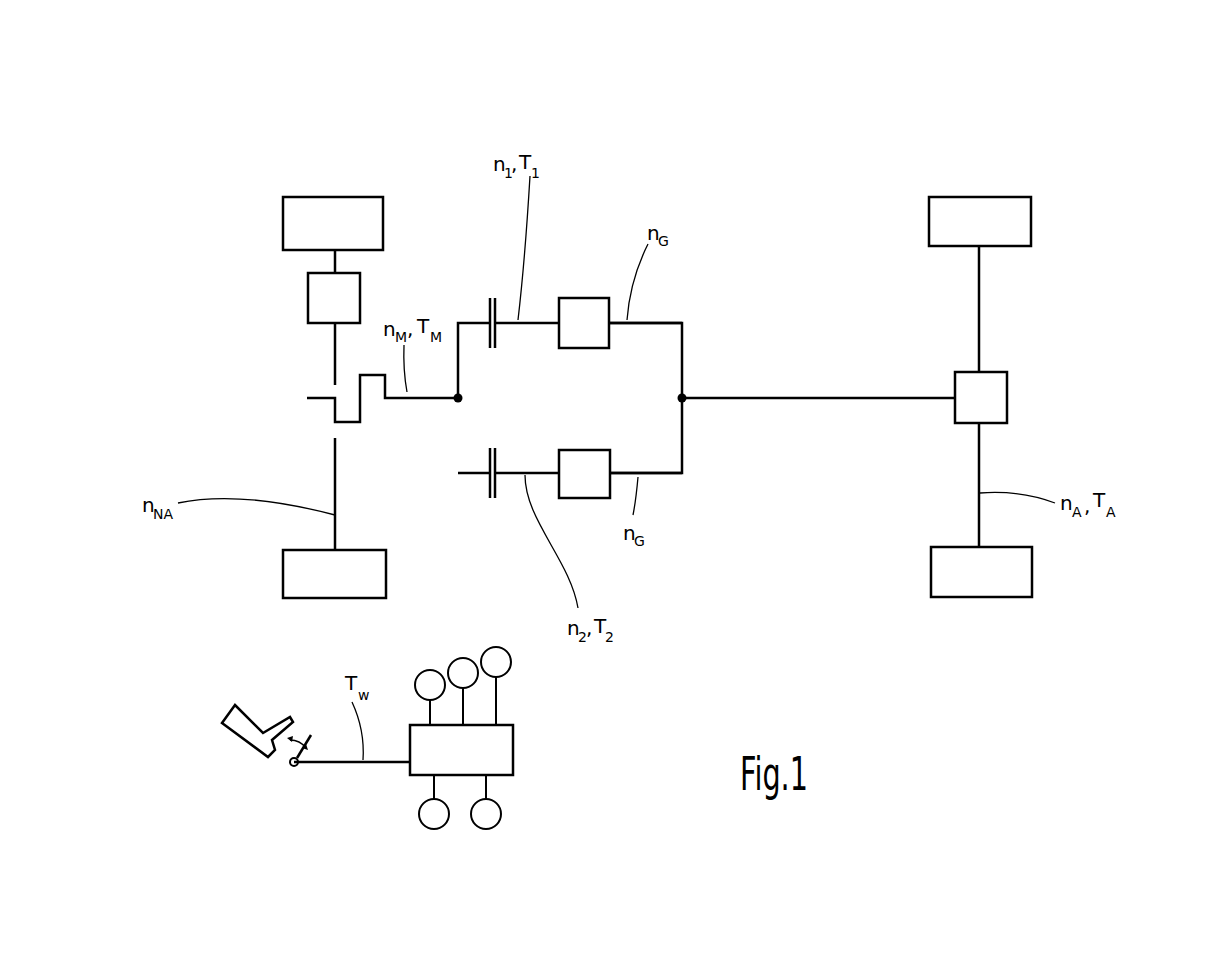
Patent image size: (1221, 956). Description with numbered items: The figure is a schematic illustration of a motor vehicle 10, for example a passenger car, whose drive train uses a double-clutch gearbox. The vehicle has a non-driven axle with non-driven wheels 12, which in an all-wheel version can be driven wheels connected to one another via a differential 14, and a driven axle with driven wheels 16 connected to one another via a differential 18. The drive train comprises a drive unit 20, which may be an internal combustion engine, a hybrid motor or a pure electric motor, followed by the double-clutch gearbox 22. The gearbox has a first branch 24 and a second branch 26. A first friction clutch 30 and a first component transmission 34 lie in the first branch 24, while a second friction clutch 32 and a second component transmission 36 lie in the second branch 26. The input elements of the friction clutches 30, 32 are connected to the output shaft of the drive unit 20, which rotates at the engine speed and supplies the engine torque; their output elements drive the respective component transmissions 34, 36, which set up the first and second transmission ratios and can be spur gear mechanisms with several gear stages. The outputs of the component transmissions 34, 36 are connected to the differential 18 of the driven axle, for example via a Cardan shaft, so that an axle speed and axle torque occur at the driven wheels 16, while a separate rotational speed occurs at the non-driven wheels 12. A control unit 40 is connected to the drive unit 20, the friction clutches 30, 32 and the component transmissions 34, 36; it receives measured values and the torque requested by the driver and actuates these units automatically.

The motor vehicle 10 is at (1062, 165).
The non-driven wheels 12 is at (338, 212).
The differential 14 is at (327, 302).
The driven wheels 16 is at (978, 217).
The differential 18 is at (993, 405).
The drive unit 20 is at (370, 392).
The double-clutch gearbox 22 is at (573, 220).
The first branch 24 is at (670, 312).
The second branch 26 is at (665, 490).
The first friction clutch 30 is at (488, 318).
The second friction clutch 32 is at (497, 487).
The first component transmission 34 is at (598, 295).
The second component transmission 36 is at (583, 499).
The control unit 40 is at (513, 750).